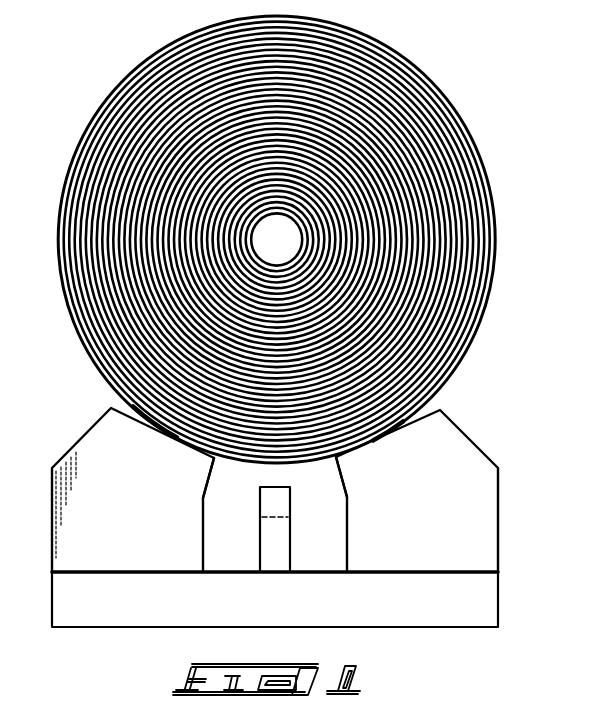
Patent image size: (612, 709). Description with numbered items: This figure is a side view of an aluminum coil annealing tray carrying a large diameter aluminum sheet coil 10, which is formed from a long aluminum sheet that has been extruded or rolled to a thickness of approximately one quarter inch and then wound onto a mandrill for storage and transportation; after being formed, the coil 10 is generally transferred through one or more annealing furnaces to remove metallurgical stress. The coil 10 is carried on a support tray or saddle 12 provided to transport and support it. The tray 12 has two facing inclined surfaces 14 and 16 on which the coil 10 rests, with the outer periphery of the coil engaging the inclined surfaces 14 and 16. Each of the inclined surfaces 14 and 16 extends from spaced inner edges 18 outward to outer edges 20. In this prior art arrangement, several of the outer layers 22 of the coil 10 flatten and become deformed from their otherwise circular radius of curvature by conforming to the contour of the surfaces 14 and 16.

The aluminum sheet coil 10 is at (460, 178).
The support tray 12 is at (489, 542).
The inclined surface 14 is at (159, 433).
The inclined surface 16 is at (392, 430).
The inner edge 18 is at (217, 460).
The outer edge 20 is at (108, 407).
The outer layer 22 is at (447, 390).